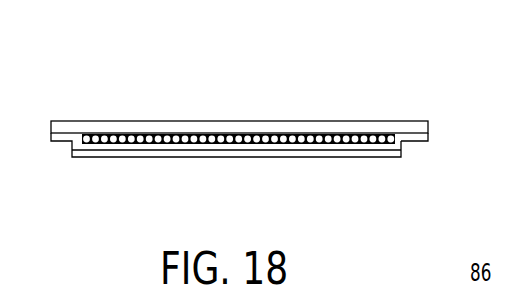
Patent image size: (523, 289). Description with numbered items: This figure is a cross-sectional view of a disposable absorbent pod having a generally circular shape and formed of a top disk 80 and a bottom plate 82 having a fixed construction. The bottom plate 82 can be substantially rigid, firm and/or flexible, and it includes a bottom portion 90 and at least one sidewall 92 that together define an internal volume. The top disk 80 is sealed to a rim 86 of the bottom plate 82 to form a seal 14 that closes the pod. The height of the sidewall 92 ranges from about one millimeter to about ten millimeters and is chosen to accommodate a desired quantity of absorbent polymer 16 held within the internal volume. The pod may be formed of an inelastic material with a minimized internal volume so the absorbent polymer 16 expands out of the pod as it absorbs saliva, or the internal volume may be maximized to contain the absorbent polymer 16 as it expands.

The seal 14 is at (239, 136).
The top disk 80 is at (67, 128).
The bottom plate 82 is at (226, 189).
The rim 86 is at (419, 143).
The bottom portion 90 is at (238, 131).
The sidewall 92 is at (104, 136).
The absorbent polymer 16 is at (113, 144).